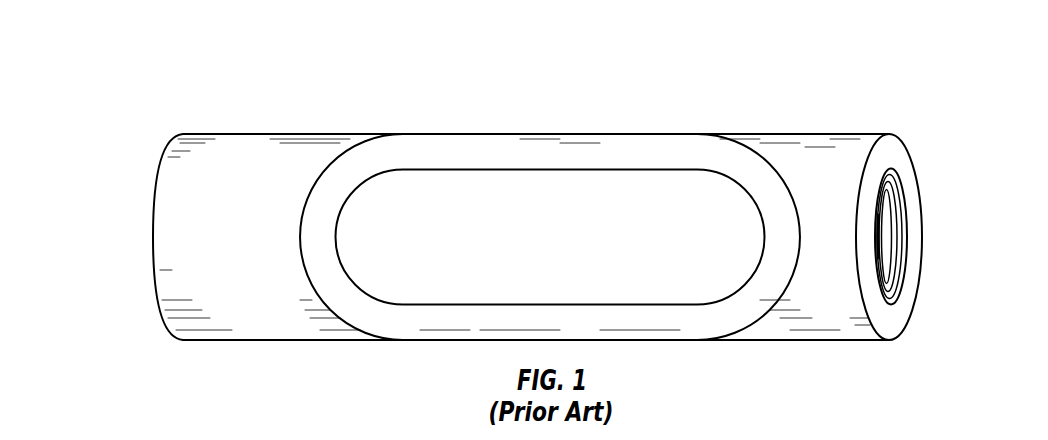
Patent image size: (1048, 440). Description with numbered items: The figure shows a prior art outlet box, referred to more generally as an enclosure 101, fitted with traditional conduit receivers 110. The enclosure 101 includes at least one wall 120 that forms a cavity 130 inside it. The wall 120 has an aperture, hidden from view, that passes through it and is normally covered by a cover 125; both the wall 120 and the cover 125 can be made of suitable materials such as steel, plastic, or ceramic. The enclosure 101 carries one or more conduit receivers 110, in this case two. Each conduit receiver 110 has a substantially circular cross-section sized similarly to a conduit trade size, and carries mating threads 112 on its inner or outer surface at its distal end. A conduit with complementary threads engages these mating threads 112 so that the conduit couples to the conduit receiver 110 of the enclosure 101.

The enclosure 101 is at (168, 66).
The conduit receiver 110 is at (150, 170).
The wall 120 is at (822, 132).
The cover 125 is at (401, 128).
The mating threads 112 is at (893, 205).
The cavity 130 is at (884, 237).